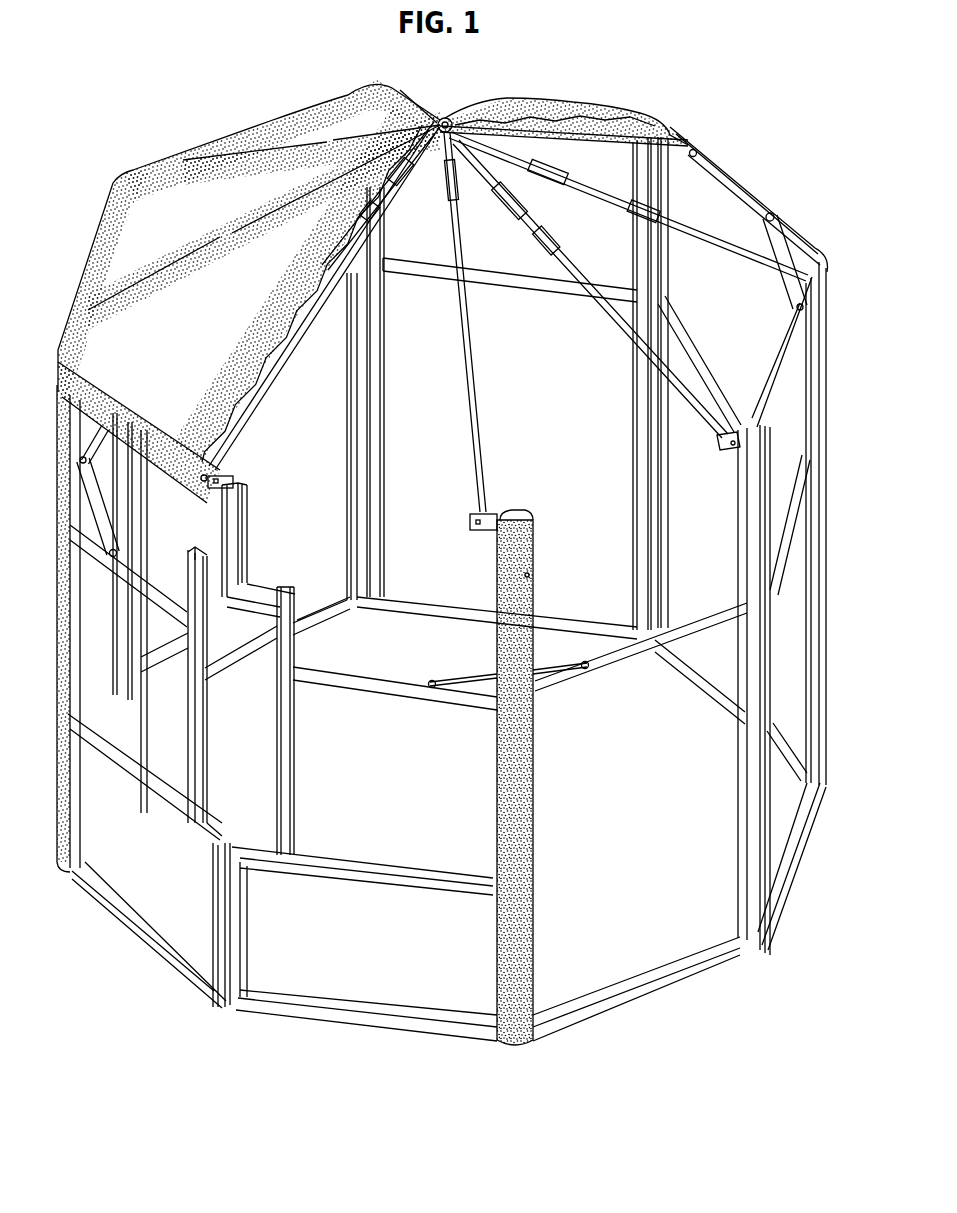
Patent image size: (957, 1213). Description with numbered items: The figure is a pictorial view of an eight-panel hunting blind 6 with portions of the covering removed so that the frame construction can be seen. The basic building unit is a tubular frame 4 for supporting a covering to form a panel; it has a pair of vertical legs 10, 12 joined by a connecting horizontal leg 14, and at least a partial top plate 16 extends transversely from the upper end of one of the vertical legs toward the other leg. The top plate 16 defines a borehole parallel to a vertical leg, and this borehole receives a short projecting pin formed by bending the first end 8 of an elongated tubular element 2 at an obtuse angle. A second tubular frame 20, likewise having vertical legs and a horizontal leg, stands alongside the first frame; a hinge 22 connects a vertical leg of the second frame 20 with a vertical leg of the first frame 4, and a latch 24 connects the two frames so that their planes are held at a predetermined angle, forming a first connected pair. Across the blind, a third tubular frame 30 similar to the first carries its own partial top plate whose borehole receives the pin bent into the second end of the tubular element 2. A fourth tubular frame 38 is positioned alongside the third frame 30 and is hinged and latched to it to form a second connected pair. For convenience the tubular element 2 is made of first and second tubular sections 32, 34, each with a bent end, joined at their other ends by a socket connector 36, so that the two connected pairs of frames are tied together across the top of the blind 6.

The tubular element 2 is at (270, 400).
The frame 4 is at (725, 574).
The hunting blind 6 is at (759, 167).
The first end 8 is at (718, 440).
The vertical leg 10 is at (738, 790).
The vertical leg 12 is at (522, 512).
The horizontal leg 14 is at (620, 657).
The partial top plate 16 is at (490, 512).
The second tubular frame 20 is at (370, 846).
The hinge 22 is at (523, 795).
The latch 24 is at (473, 677).
The third tubular frame 30 is at (335, 508).
The first tubular section 32 is at (556, 138).
The second tubular section 34 is at (302, 336).
The socket connector 36 is at (407, 180).
The fourth tubular frame 38 is at (425, 293).